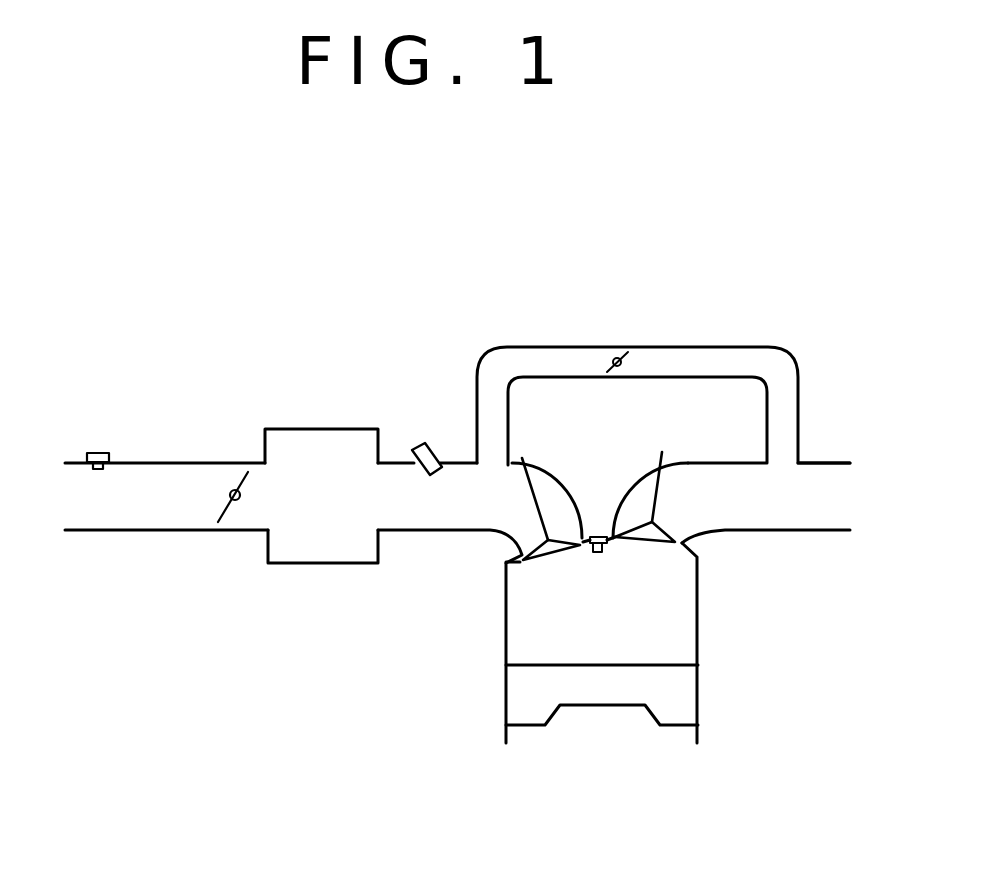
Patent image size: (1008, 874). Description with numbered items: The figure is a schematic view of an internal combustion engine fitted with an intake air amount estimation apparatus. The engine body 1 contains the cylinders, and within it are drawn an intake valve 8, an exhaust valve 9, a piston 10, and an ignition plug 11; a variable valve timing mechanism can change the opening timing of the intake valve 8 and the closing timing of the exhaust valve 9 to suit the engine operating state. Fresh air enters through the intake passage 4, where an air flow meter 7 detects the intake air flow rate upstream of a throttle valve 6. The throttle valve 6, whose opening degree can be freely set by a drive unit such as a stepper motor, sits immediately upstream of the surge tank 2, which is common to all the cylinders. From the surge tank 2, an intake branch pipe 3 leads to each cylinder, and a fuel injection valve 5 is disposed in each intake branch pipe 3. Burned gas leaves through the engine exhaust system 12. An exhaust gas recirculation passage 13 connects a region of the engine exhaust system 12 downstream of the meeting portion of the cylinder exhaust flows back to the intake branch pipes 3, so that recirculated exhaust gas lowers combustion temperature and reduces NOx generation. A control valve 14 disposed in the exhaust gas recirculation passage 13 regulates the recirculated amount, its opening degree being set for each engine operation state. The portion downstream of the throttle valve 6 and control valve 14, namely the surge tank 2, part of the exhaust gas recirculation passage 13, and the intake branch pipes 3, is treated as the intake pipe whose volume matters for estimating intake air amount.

The engine body 1 is at (707, 630).
The surge tank 2 is at (312, 548).
The intake branch pipe 3 is at (432, 515).
The intake passage 4 is at (153, 515).
The fuel injection valve 5 is at (417, 445).
The throttle valve 6 is at (242, 470).
The air flow meter 7 is at (93, 453).
The intake valve 8 is at (558, 537).
The exhaust valve 9 is at (673, 535).
The piston 10 is at (588, 682).
The ignition plug 11 is at (603, 537).
The engine exhaust system 12 is at (782, 530).
The exhaust gas recirculation passage 13 is at (715, 360).
The control valve 14 is at (627, 352).